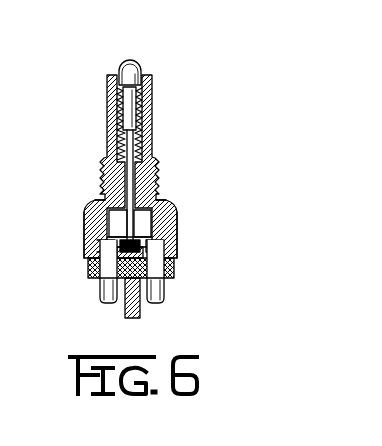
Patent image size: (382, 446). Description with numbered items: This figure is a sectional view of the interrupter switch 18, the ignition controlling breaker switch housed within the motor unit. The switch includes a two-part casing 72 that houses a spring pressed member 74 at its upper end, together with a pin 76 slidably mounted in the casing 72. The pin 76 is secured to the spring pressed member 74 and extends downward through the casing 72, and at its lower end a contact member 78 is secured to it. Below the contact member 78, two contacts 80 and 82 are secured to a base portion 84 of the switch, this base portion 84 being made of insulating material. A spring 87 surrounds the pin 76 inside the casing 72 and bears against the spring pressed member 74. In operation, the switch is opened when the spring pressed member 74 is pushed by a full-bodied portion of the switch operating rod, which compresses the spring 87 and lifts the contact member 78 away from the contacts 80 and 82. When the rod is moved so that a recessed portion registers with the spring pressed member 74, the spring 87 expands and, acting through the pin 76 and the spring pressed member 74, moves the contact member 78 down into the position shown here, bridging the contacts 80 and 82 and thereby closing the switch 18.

The interrupter switch 18 is at (194, 200).
The two-part casing 72 is at (99, 211).
The spring pressed member 74 is at (141, 70).
The pin 76 is at (157, 173).
The contact member 78 is at (153, 249).
The contact 80 is at (177, 231).
The contact 82 is at (109, 246).
The base portion 84 is at (92, 279).
The spring 87 is at (145, 111).